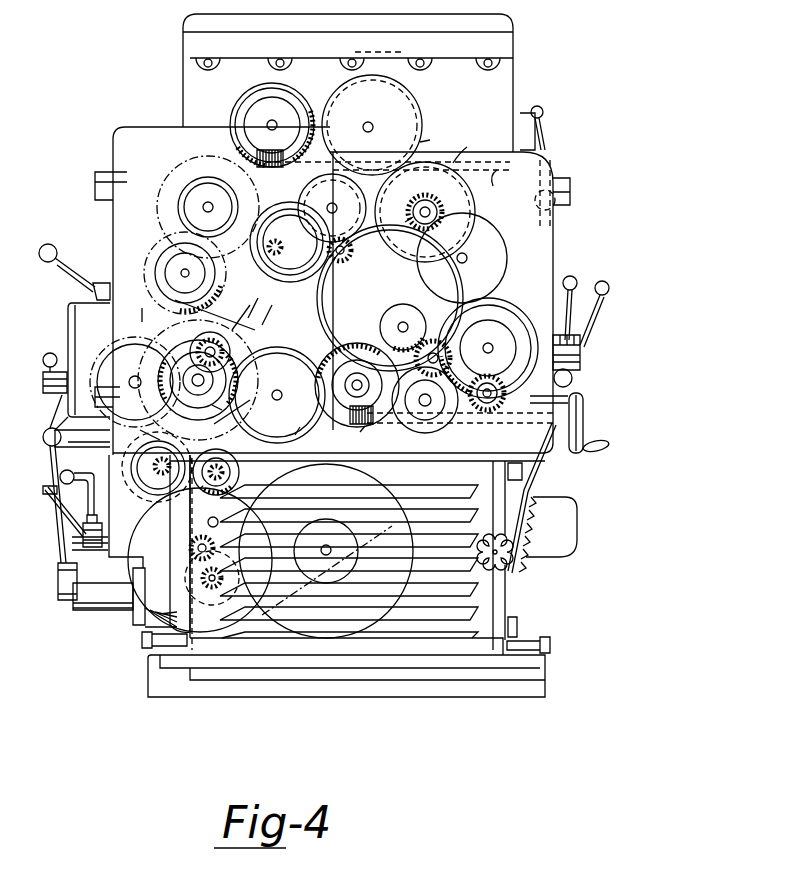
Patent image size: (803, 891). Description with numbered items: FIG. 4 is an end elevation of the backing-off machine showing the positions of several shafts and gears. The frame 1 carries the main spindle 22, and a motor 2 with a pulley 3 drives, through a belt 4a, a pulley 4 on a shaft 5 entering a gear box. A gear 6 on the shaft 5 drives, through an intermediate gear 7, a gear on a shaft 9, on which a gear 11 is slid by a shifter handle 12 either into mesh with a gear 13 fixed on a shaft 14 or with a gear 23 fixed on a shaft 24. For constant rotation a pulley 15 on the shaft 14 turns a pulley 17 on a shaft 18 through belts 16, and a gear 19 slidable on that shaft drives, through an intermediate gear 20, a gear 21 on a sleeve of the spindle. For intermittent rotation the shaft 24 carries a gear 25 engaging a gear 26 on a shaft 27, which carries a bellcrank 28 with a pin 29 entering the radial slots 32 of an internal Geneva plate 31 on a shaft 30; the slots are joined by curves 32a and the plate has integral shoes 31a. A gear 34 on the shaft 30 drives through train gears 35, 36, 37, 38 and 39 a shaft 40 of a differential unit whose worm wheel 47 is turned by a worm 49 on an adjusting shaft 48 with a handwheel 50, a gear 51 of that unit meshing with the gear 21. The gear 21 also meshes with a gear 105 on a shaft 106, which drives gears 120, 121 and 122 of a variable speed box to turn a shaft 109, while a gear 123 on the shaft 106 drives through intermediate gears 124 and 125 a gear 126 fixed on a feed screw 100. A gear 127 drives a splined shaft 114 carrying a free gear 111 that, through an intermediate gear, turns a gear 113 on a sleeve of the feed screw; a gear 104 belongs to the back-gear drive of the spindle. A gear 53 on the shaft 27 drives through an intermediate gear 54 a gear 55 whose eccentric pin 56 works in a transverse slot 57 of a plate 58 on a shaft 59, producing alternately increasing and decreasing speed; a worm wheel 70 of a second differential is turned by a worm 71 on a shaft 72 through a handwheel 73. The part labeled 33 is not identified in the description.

The frame 1 is at (113, 134).
The motor 2 is at (368, 623).
The pulley 3 is at (358, 549).
The pulley 4 is at (248, 626).
The belt 4a is at (302, 598).
The shaft 5 is at (210, 580).
The gear 6 is at (236, 562).
The intermediate gear 7 is at (197, 503).
The shaft 9 is at (216, 475).
The gear 11 is at (242, 472).
The shifter handle 12 is at (67, 590).
The gear 13 is at (145, 496).
The shaft 14 is at (158, 492).
The pulley 15 is at (128, 484).
The belts 16 is at (266, 346).
The pulley 17 is at (300, 264).
The shaft 18 is at (281, 248).
The gear 19 is at (277, 243).
The intermediate gear 20 is at (368, 190).
The gear 21 is at (423, 124).
The main spindle 22 is at (372, 126).
The gear 23 is at (160, 467).
The shaft 24 is at (175, 458).
The gear 25 is at (140, 430).
The gear 26 is at (137, 368).
The shaft 27 is at (200, 390).
The bellcrank 28 is at (228, 355).
The pin 29 is at (218, 350).
The shaft 30 is at (213, 345).
The internal Geneva plate 31 is at (168, 312).
The shoes 31a is at (214, 424).
The radial slots 32 is at (272, 305).
The curve 32a is at (250, 305).
The control lever 33 is at (74, 345).
The gear 34 is at (258, 298).
The train gear 35 is at (155, 270).
The train gear 36 is at (155, 245).
The train gear 37 is at (178, 210).
The train gear 38 is at (180, 170).
The train gear 39 is at (228, 115).
The shaft 40 is at (275, 122).
The worm wheel 47 is at (252, 95).
The adjusting shaft 48 is at (512, 152).
The worm 49 is at (265, 155).
The handwheel 50 is at (538, 203).
The gear 51 is at (318, 100).
The gear 53 is at (222, 398).
The intermediate gear 54 is at (280, 402).
The gear 55 is at (300, 427).
The eccentric drive pin 56 is at (428, 397).
The transverse slot 57 is at (332, 322).
The plate 58 is at (380, 356).
The shaft 59 is at (362, 377).
The worm wheel 70 is at (348, 413).
The worm 71 is at (360, 432).
The shaft 72 is at (530, 428).
The handwheel 73 is at (584, 405).
The feed screw 100 is at (405, 322).
The gear 104 is at (420, 140).
The gear 105 is at (453, 163).
The shaft 106 is at (440, 207).
The shaft 109 is at (490, 348).
The gear 111 is at (425, 425).
The gear 113 is at (420, 351).
The splined shaft 114 is at (431, 400).
The gear 120 is at (424, 200).
The gear 121 is at (500, 268).
The gear 122 is at (508, 305).
The gear 123 is at (413, 217).
The intermediate gear 124 is at (402, 210).
The intermediate gear 125 is at (341, 238).
The gear 126 is at (328, 297).
The gear 127 is at (500, 410).